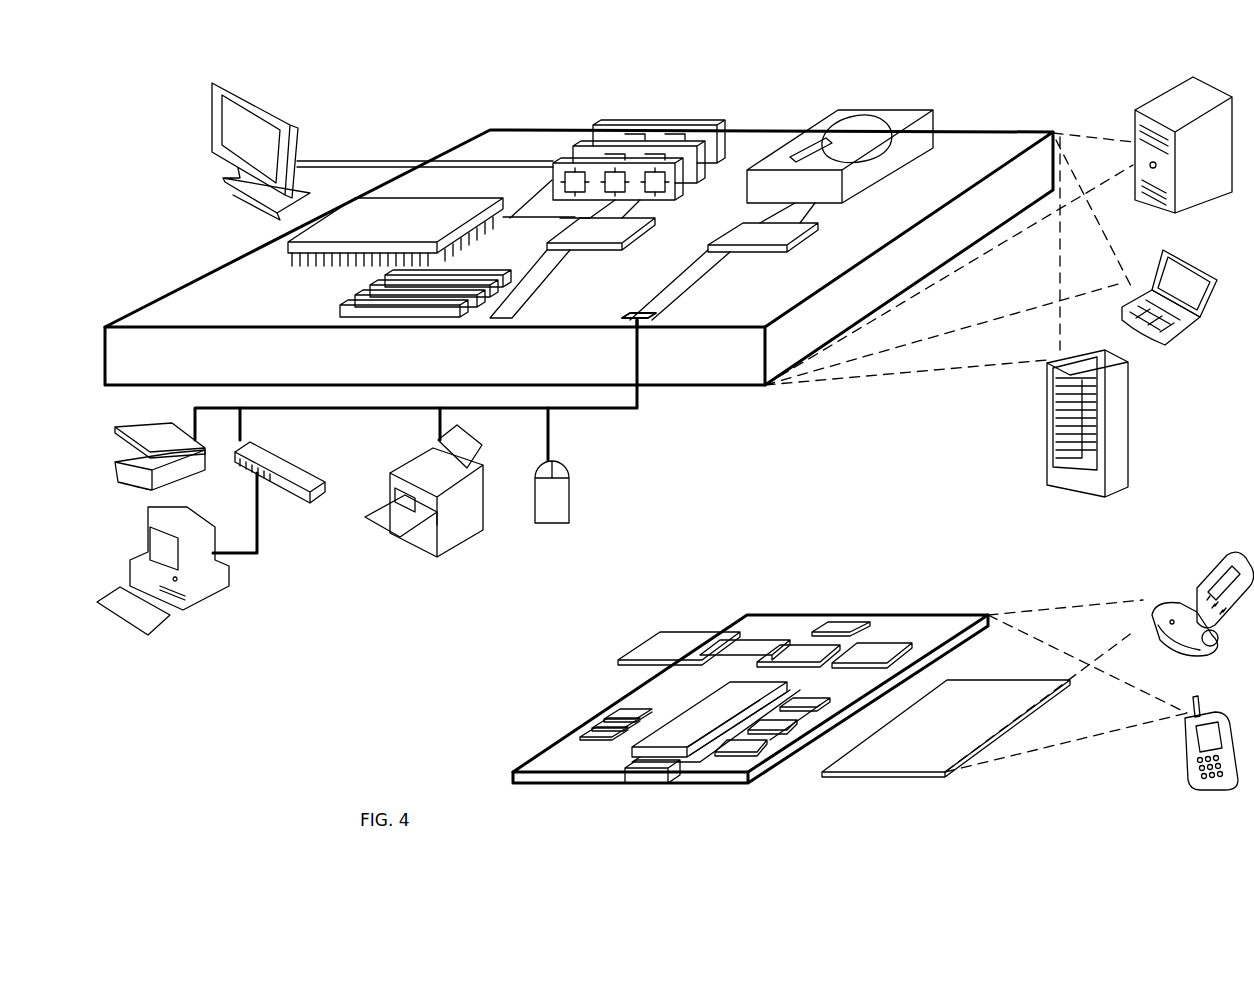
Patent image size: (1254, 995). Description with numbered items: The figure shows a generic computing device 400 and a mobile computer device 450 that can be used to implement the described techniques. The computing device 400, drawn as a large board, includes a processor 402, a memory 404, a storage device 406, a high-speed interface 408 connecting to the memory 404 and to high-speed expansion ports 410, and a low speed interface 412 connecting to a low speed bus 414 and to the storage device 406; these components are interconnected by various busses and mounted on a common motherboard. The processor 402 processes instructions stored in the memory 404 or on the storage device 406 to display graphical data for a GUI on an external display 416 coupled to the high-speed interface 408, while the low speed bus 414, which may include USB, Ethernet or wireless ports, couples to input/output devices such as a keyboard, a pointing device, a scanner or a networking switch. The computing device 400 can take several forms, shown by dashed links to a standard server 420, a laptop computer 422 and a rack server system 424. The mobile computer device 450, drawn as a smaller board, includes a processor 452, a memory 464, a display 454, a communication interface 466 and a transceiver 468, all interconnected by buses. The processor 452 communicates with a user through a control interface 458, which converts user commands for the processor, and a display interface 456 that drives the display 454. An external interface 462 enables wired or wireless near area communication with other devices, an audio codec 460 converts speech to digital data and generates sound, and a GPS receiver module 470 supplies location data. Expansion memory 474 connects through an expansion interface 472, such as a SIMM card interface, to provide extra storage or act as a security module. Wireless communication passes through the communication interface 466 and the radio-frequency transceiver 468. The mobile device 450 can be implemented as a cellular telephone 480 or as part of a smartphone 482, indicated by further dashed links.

The computing device 400 is at (414, 104).
The processor 402 is at (290, 248).
The memory 404 is at (614, 124).
The storage device 406 is at (836, 114).
The high-speed interface 408 is at (580, 238).
The high-speed expansion ports 410 is at (345, 300).
The low speed interface 412 is at (763, 232).
The low speed bus 414 is at (644, 330).
The display 416 is at (208, 92).
The standard server 420 is at (1134, 119).
The laptop computer 422 is at (1164, 254).
The rack server system 424 is at (1044, 447).
The mobile computer device 450 is at (732, 592).
The processor 452 is at (682, 754).
The display 454 is at (947, 776).
The display interface 456 is at (758, 756).
The control interface 458 is at (793, 731).
The audio codec 460 is at (805, 711).
The external interface 462 is at (649, 776).
The memory 464 is at (595, 732).
The communication interface 466 is at (785, 662).
The transceiver 468 is at (870, 643).
The GPS receiver module 470 is at (839, 625).
The expansion interface 472 is at (728, 631).
The expansion memory 474 is at (657, 631).
The cellular telephone 480 is at (1212, 564).
The smartphone 482 is at (1197, 696).